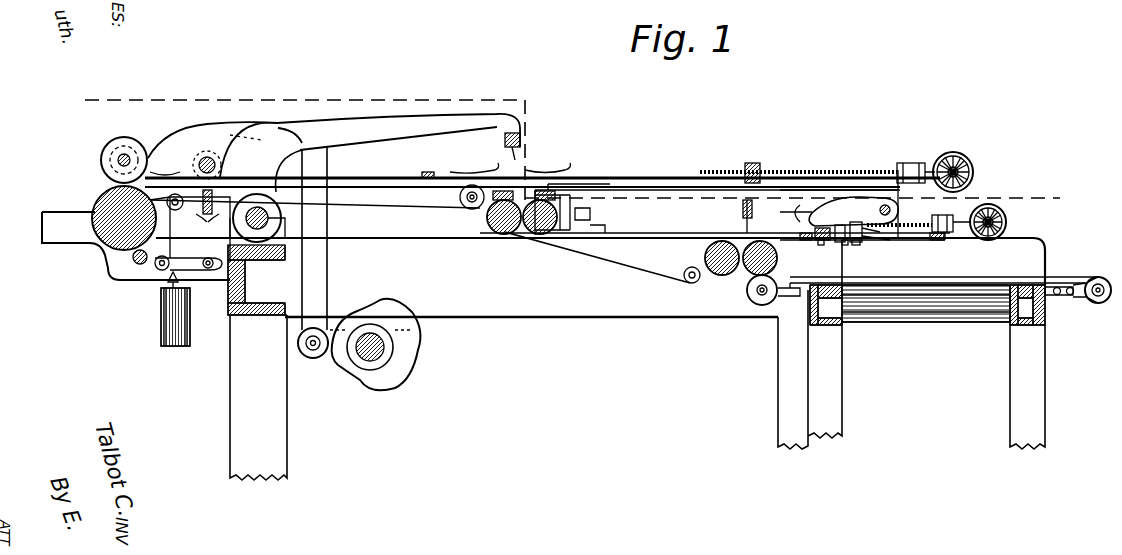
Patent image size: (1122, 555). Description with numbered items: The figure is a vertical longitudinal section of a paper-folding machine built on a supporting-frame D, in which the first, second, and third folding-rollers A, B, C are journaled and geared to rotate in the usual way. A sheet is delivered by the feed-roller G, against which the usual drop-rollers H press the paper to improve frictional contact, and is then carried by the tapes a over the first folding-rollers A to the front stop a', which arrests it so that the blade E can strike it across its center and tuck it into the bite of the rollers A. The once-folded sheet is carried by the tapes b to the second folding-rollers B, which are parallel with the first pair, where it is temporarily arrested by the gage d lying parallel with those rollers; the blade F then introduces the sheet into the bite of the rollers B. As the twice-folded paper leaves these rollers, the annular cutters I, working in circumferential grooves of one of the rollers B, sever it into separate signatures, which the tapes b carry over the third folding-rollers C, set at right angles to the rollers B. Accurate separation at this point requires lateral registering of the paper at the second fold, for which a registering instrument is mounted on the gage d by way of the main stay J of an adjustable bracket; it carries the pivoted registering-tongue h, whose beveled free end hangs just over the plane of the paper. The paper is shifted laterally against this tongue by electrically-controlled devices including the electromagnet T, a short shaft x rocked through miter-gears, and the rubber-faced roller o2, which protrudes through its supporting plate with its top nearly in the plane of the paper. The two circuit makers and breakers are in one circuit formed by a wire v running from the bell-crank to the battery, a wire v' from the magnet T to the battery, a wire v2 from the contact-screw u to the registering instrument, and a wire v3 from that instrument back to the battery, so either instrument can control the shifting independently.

The first folding-rollers A is at (545, 236).
The second folding-rollers B is at (704, 256).
The third folding-rollers C is at (920, 322).
The supporting-frame D is at (232, 372).
The first folding-blade E is at (524, 153).
The second folding-blade F is at (743, 214).
The feed-roller G is at (98, 204).
The drop-rollers H is at (100, 160).
The annular cutters I is at (748, 300).
The main stay J is at (875, 240).
The electromagnet T is at (852, 211).
The contact-screw u is at (812, 212).
The tapes a is at (542, 169).
The front stop a' is at (798, 154).
The tapes b is at (653, 240).
The gage d is at (857, 246).
The registering-tongue h is at (846, 246).
The rubber-faced roller o2 is at (825, 246).
The wire v is at (831, 196).
The wire v' is at (811, 184).
The wire v2 is at (867, 230).
The wire v3 is at (856, 222).
The short shaft x is at (564, 149).